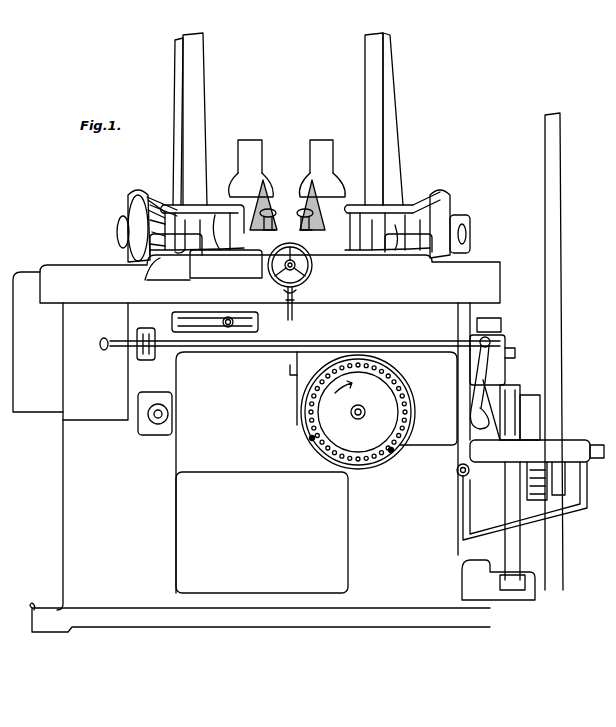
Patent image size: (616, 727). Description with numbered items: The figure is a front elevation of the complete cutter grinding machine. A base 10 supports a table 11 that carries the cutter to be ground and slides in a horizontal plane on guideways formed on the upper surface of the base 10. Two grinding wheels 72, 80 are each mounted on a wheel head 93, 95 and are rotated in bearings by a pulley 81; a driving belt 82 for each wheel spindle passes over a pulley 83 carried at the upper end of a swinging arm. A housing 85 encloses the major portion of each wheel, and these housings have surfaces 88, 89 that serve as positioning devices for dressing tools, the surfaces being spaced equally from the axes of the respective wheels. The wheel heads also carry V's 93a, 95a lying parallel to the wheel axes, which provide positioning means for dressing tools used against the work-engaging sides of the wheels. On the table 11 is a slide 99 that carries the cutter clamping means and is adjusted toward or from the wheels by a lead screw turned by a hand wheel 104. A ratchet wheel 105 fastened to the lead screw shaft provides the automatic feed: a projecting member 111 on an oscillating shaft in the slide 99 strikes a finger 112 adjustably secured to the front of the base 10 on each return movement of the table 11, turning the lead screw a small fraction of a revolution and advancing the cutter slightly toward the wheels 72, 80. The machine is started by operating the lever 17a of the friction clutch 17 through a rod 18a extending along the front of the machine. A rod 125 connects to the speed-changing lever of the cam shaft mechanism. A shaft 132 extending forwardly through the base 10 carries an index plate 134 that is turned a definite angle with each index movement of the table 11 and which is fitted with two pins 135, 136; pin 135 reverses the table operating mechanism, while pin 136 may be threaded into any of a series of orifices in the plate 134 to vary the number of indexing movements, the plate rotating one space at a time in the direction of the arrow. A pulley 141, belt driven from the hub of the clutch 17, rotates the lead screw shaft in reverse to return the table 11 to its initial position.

The base 10 is at (75, 558).
The table 11 is at (145, 272).
The friction clutch 17 is at (533, 395).
The lever 17a is at (477, 378).
The rod 18a is at (380, 346).
The wheel 72 is at (270, 205).
The wheel 80 is at (301, 210).
The pulley 81 is at (185, 255).
The driving belt 82 is at (168, 196).
The pulley 83 is at (128, 210).
The housing 85 is at (245, 190).
The surface 88 is at (250, 138).
The surface 89 is at (322, 138).
The wheel head 93 is at (155, 236).
The V 93a is at (140, 200).
The wheel head 95 is at (450, 238).
The V 95a is at (420, 215).
The slide 99 is at (205, 260).
The hand wheel 104 is at (312, 289).
The ratchet wheel 105 is at (272, 262).
The projecting member 111 is at (287, 318).
The finger 112 is at (227, 332).
The rod 125 is at (462, 467).
The shaft 132 is at (360, 408).
The index plate 134 is at (405, 418).
The pin 135 is at (392, 452).
The pin 136 is at (313, 440).
The pulley 141 is at (505, 330).